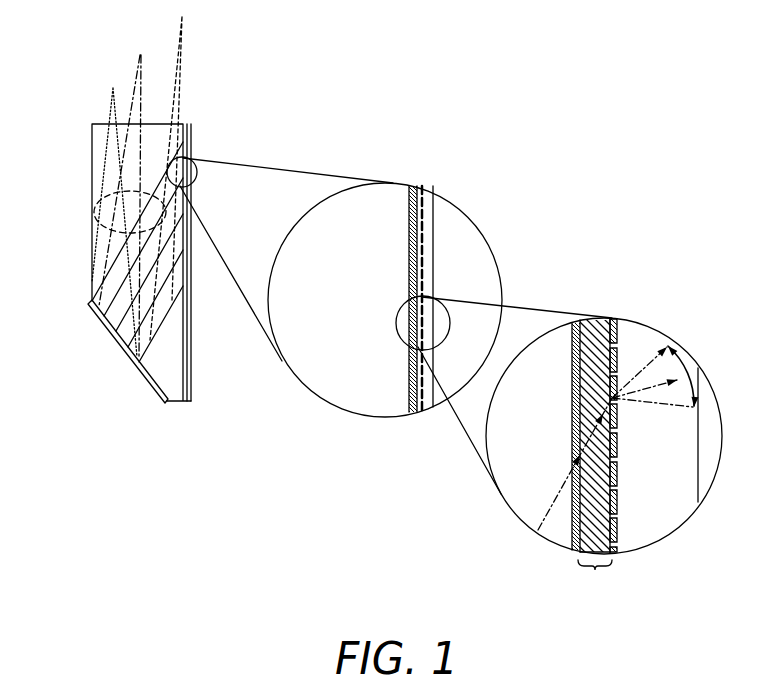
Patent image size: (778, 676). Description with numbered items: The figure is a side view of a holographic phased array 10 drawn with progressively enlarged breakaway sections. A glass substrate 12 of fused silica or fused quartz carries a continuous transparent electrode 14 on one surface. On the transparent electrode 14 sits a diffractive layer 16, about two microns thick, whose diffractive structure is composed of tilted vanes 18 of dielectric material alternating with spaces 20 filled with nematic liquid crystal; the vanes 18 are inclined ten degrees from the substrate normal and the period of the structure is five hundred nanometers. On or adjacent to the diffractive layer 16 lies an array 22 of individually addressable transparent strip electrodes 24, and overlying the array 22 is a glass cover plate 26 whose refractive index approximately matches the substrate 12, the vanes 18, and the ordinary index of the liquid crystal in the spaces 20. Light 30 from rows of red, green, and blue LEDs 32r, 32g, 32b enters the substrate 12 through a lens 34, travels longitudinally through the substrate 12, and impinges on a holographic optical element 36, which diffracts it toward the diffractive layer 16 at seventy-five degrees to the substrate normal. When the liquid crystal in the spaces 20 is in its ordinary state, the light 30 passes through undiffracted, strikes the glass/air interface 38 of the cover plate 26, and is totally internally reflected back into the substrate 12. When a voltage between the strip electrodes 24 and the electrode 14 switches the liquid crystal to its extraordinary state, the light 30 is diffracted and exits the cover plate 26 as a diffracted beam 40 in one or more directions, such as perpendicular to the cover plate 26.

The holographic phased array 10 is at (192, 126).
The glass substrate 12 is at (92, 146).
The continuous transparent electrode 14 is at (410, 218).
The diffractive layer 16 is at (415, 412).
The tilted vanes 18 is at (604, 551).
The spaces 20 is at (603, 520).
The array of strip electrodes 22 is at (423, 190).
The transparent strip electrodes 24 is at (617, 473).
The glass cover plate 26 is at (428, 407).
The light 30 is at (192, 44).
The blue LEDs 32b is at (178, 32).
The green LEDs 32g is at (137, 70).
The red LEDs 32r is at (108, 108).
The lens 34 is at (98, 196).
The holographic optical element 36 is at (106, 322).
The glass/air interface 38 is at (192, 300).
The diffracted beam 40 is at (650, 388).